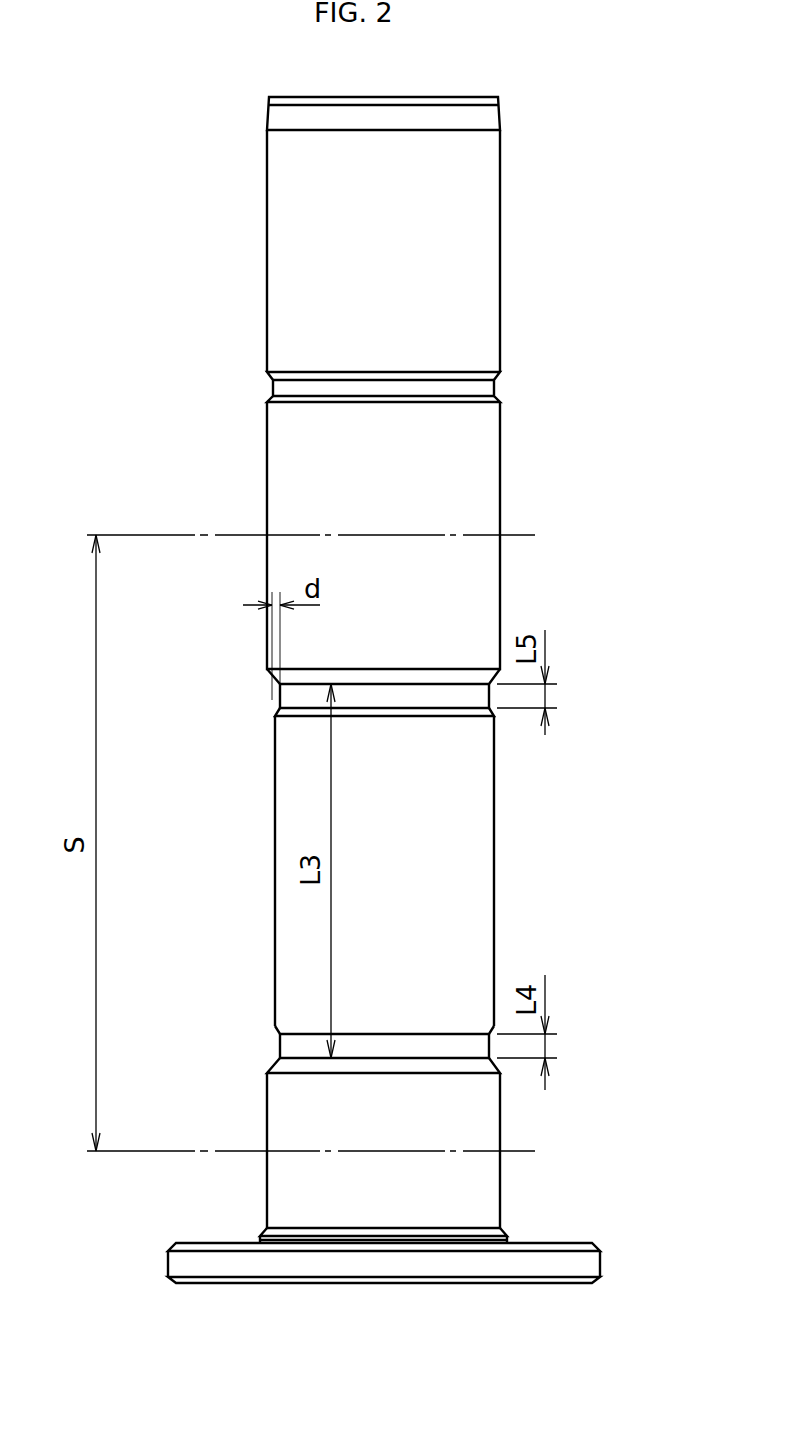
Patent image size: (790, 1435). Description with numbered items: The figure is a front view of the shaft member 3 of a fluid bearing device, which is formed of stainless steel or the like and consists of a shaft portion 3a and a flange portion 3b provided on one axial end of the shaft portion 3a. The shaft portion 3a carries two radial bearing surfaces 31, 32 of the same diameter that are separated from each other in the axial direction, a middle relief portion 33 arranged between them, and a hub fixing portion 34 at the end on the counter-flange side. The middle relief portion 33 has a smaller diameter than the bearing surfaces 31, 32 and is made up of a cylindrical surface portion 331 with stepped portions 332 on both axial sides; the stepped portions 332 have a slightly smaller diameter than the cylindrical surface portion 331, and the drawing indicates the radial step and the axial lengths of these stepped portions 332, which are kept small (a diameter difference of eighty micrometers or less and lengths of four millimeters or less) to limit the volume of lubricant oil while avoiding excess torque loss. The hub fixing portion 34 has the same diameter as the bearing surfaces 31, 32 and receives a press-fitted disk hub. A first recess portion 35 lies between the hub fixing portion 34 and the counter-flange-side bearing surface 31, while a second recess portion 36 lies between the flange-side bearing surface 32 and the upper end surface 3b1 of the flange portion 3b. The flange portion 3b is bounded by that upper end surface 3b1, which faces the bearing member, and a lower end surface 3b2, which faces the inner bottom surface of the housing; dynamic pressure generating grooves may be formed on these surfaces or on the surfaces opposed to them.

The shaft member 3 is at (601, 534).
The shaft portion 3a is at (528, 385).
The flange portion 3b is at (602, 1261).
The upper end surface of the flange portion 3b1 is at (557, 1243).
The lower end surface of the flange portion 3b2 is at (557, 1283).
The radial bearing surface 31 is at (267, 492).
The radial bearing surface 32 is at (266, 1115).
The middle relief portion 33 is at (172, 745).
The cylindrical surface portion 331 is at (275, 885).
The stepped portion 332 is at (277, 697).
The hub fixing portion 34 is at (266, 279).
The first recess portion 35 is at (273, 391).
The second recess portion 36 is at (266, 1232).